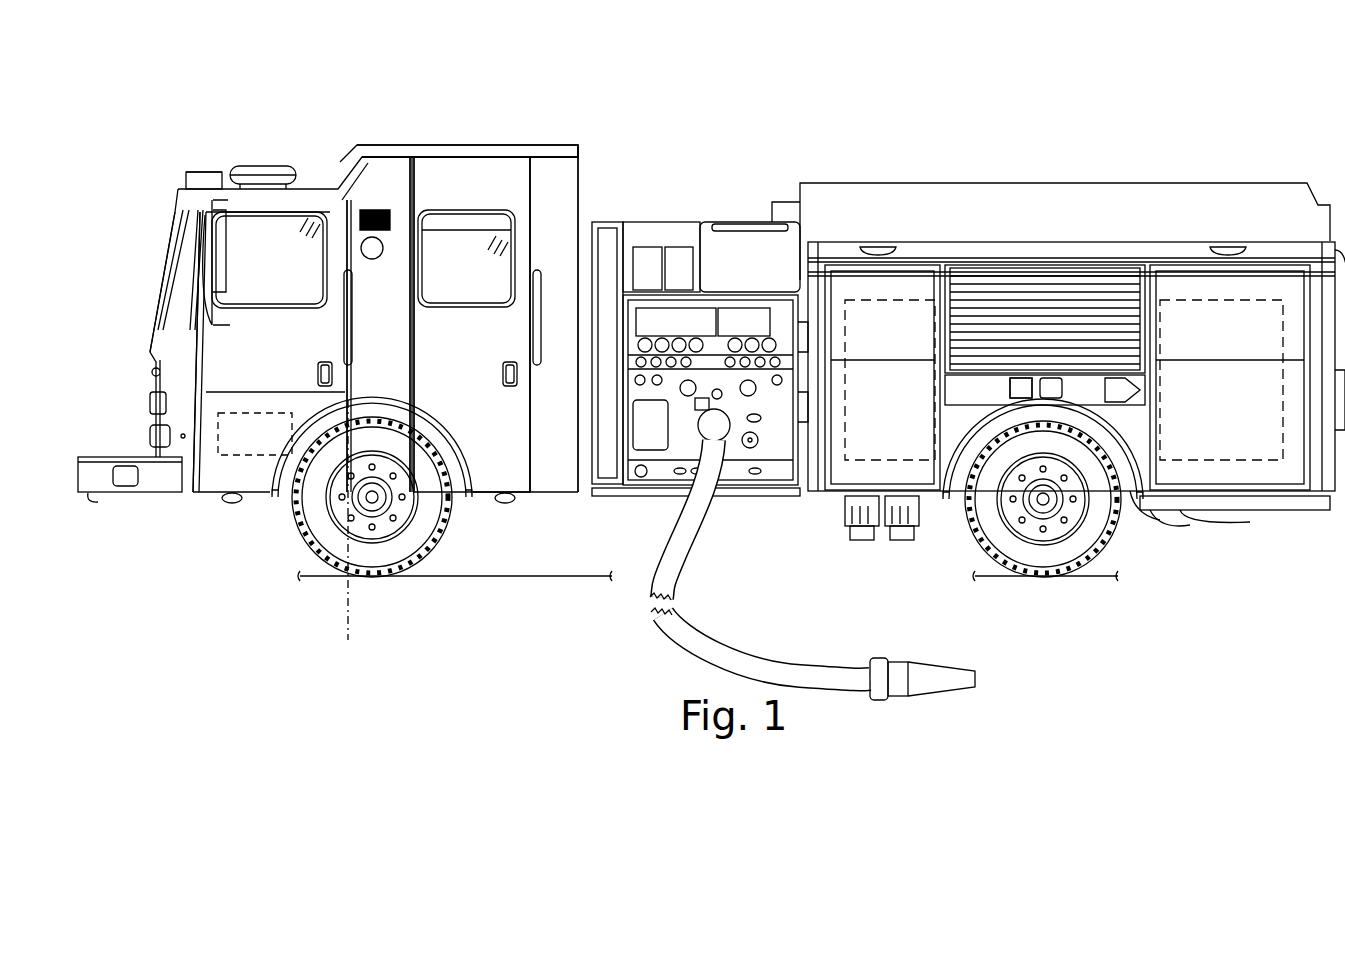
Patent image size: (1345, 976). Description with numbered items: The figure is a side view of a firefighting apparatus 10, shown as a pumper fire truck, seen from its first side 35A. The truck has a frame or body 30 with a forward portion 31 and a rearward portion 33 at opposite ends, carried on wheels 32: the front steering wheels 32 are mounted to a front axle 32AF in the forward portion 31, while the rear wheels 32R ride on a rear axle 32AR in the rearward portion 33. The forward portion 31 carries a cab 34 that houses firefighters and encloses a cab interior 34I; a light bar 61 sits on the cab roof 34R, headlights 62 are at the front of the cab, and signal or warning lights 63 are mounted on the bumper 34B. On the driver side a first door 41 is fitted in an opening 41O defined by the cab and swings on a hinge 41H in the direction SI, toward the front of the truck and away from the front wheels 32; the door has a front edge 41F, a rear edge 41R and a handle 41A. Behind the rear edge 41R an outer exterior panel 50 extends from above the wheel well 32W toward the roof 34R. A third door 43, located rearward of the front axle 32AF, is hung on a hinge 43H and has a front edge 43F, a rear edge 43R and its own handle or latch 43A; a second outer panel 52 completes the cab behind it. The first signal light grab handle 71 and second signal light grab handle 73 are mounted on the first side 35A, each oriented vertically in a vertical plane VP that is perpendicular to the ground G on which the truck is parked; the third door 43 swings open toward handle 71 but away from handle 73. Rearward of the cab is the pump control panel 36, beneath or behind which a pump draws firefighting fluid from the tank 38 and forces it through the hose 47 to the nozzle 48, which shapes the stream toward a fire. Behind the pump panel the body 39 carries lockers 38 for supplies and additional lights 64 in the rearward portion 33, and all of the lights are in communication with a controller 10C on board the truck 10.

The fire truck 10 is at (203, 132).
The light bar 61 is at (192, 172).
The cab 34 is at (178, 196).
The cab interior 34I is at (290, 292).
The roof of the cab 34R is at (482, 145).
The bumper 34B is at (143, 493).
The outer exterior panel 50 is at (350, 190).
The frame 30 is at (442, 155).
The forward portion 31 is at (555, 140).
The rearward portion 33 is at (815, 145).
The firefighting fluid tank 38 is at (1140, 290).
The first signal light grab handle 71 is at (348, 268).
The second signal light grab handle 73 is at (569, 252).
The third door 43 is at (522, 483).
The front edge 43F is at (410, 200).
The rear edge 43R is at (530, 200).
The hinge 43H is at (410, 325).
The handle 43A is at (503, 374).
The second outer panel 52 is at (575, 200).
The first door 41 is at (240, 485).
The front edge 41F is at (198, 330).
The rear edge 41R is at (345, 337).
The opening 41O is at (165, 347).
The hinge 41H is at (188, 385).
The handle 41A is at (318, 372).
The controller 10C is at (240, 412).
The headlights 62 is at (150, 434).
The signal or warning lights 63 is at (128, 482).
The wheels 32 is at (420, 562).
The wheel well 32W is at (425, 430).
The front axle 32AF is at (370, 506).
The rear wheels 32R is at (1065, 575).
The rear axle 32AR is at (1043, 505).
The vertical plane VP is at (346, 598).
The door swing direction SI is at (258, 460).
The ground G is at (573, 575).
The pump control panel 36 is at (752, 446).
The hose 47 is at (682, 570).
The nozzle 48 is at (935, 688).
The first side 35A is at (640, 680).
The body 39 is at (938, 530).
The additional lights 64 is at (1048, 400).